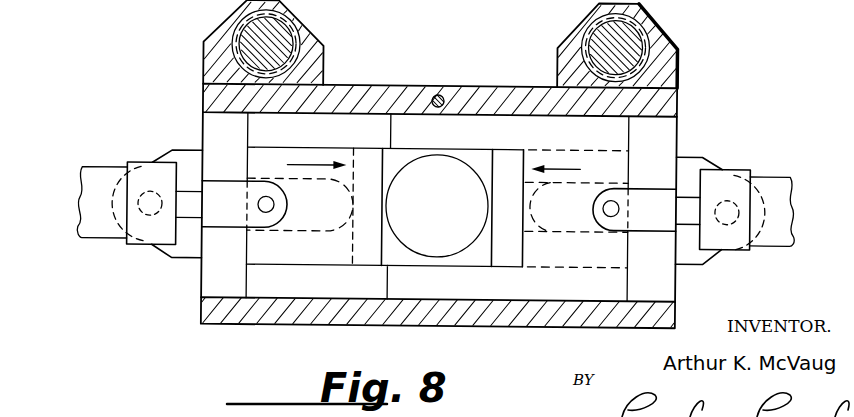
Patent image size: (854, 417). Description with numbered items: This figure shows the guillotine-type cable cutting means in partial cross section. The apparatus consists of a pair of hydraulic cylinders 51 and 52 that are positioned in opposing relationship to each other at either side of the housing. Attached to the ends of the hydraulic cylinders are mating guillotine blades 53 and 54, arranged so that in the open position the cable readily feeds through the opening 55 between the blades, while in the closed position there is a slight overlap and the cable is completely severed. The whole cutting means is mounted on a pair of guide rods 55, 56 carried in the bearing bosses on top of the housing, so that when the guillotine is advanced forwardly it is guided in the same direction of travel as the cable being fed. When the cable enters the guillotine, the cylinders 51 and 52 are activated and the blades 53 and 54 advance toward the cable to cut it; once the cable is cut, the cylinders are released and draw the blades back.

The hydraulic cylinder 51 is at (100, 183).
The hydraulic cylinder 52 is at (775, 187).
The guillotine blade 53 is at (368, 167).
The guillotine blade 54 is at (510, 172).
The guide rod 55 is at (255, 35).
The guide rod 56 is at (628, 47).